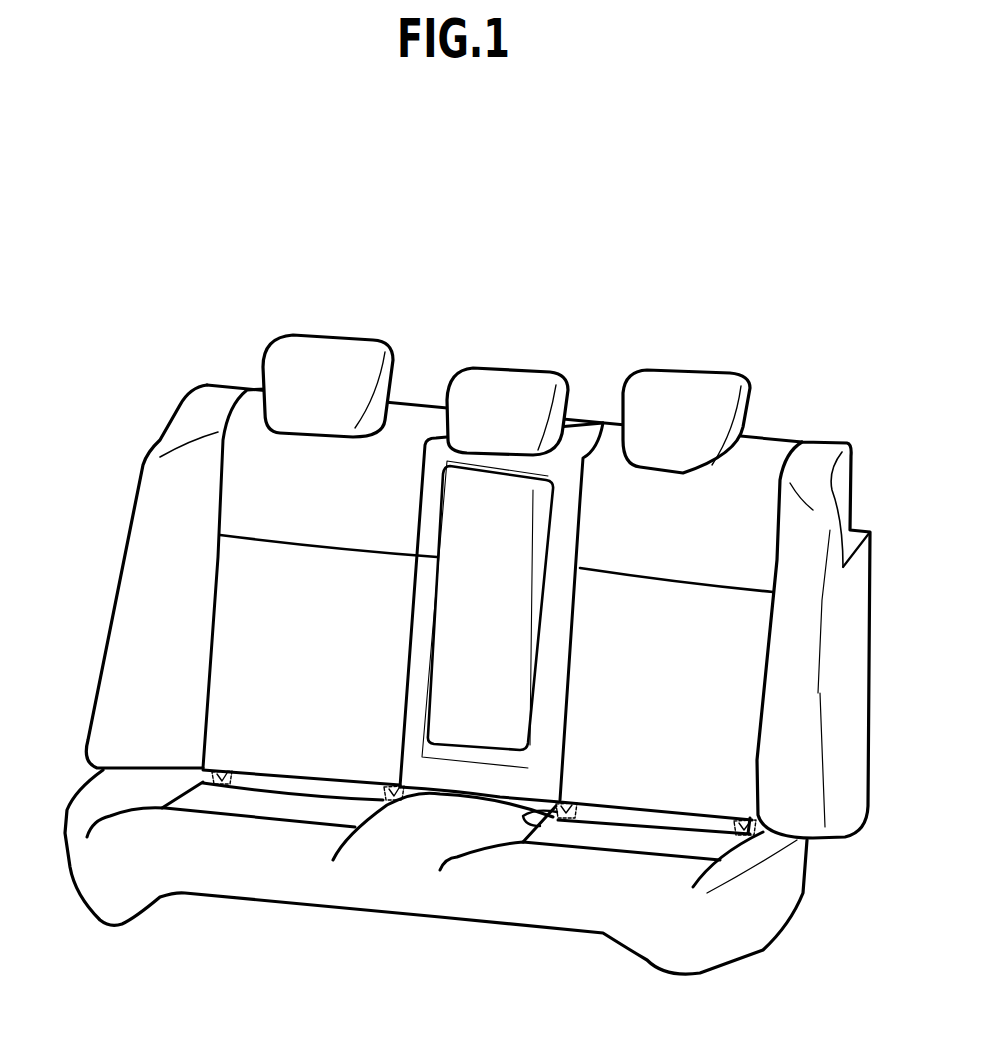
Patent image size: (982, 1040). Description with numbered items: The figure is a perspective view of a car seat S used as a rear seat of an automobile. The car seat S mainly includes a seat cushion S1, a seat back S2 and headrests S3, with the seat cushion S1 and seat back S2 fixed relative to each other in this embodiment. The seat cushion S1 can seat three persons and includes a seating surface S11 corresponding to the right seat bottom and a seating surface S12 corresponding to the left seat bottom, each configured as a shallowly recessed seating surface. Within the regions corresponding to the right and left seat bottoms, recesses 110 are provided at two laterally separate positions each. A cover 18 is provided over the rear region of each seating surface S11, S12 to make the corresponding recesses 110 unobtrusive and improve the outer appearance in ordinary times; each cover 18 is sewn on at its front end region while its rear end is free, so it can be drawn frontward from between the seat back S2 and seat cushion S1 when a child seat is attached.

The car seat S is at (662, 271).
The seat cushion S1 is at (368, 915).
The seat back S2 is at (177, 411).
The headrest S3 is at (358, 336).
The seating surface S11 is at (300, 810).
The seating surface S12 is at (640, 842).
The cover 18 is at (304, 787).
The recess 110 is at (222, 770).